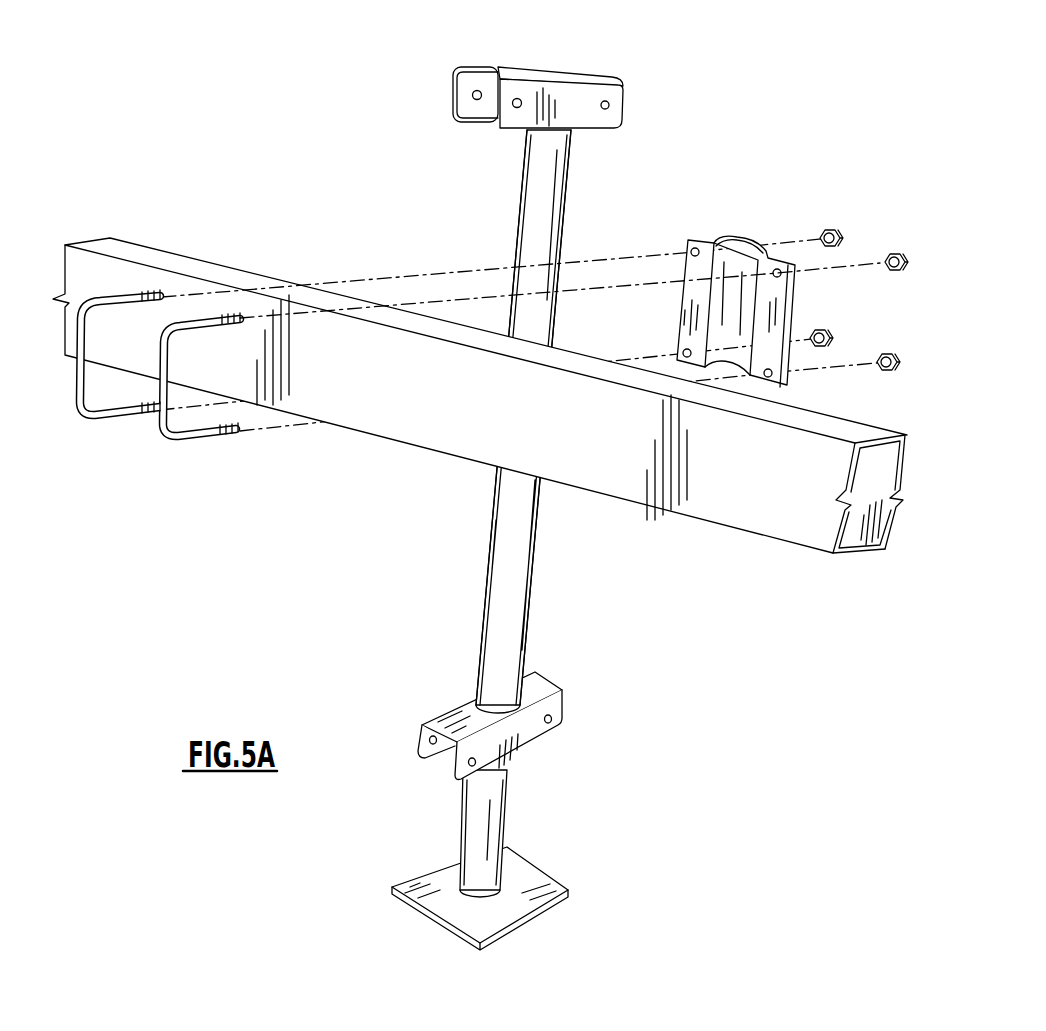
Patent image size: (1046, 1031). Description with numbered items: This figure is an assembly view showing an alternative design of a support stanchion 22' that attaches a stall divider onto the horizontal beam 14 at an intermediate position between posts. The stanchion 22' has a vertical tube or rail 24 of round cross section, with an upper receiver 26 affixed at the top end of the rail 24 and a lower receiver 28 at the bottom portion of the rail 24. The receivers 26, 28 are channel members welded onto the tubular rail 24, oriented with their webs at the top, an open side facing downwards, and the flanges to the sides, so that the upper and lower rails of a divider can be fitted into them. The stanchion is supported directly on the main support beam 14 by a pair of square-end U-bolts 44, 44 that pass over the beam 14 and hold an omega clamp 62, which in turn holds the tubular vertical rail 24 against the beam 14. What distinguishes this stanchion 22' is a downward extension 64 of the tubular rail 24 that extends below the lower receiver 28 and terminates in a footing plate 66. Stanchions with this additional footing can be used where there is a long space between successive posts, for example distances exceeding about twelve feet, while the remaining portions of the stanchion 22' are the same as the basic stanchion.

The horizontal beam 14 is at (777, 513).
The stanchion 22' is at (491, 417).
The vertical tube or rail 24 is at (528, 610).
The upper receiver 26 is at (553, 78).
The lower receiver 28 is at (562, 707).
The square-end U-bolts 44 is at (103, 419).
The omega clamp 62 is at (736, 238).
The downward extension 64 is at (508, 802).
The footing plate 66 is at (537, 887).